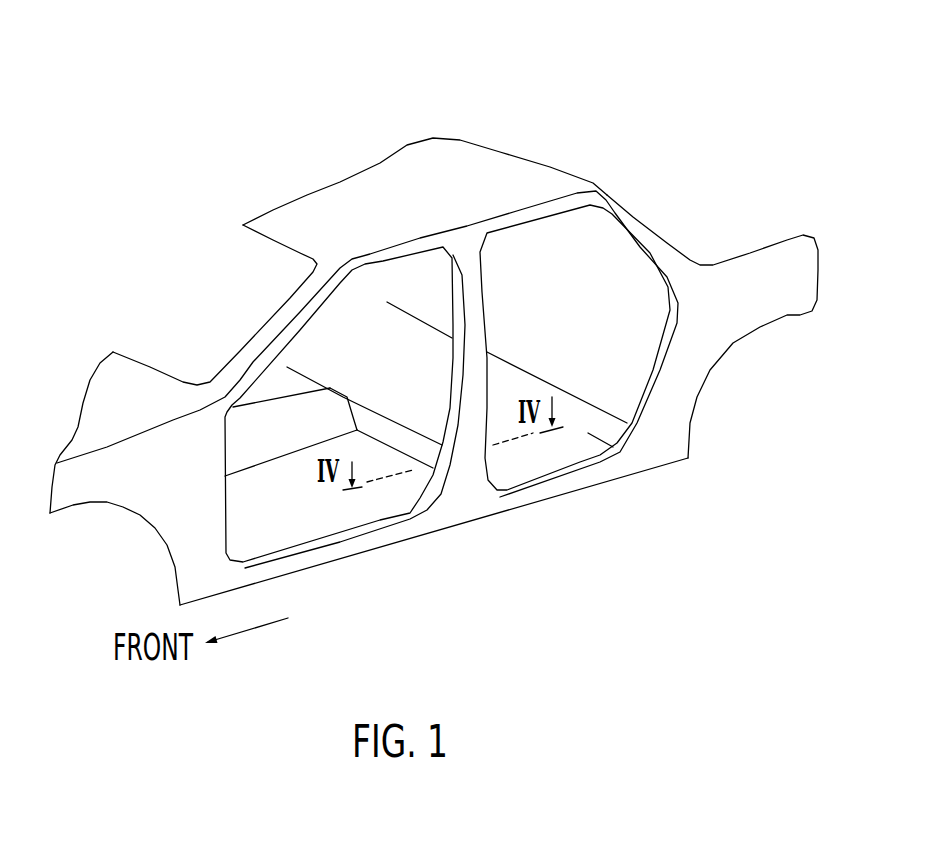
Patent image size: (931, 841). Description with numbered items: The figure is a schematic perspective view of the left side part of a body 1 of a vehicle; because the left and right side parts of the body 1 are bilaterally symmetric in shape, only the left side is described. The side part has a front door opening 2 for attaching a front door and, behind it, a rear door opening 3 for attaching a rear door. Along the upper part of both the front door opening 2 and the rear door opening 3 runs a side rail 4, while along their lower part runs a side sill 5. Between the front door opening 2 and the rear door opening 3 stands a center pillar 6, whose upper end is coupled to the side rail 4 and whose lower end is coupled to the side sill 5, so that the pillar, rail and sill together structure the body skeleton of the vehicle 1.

The body 1 is at (650, 125).
The front door opening 2 is at (317, 515).
The rear door opening 3 is at (615, 457).
The side rail 4 is at (372, 247).
The side sill 5 is at (552, 488).
The center pillar 6 is at (475, 315).